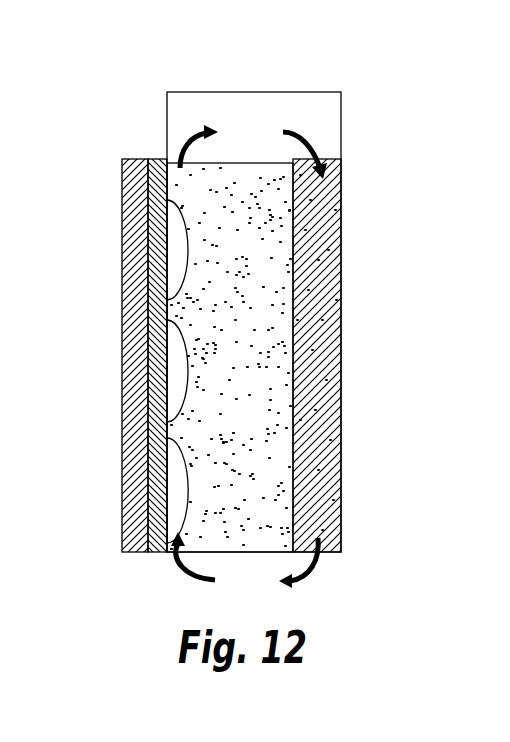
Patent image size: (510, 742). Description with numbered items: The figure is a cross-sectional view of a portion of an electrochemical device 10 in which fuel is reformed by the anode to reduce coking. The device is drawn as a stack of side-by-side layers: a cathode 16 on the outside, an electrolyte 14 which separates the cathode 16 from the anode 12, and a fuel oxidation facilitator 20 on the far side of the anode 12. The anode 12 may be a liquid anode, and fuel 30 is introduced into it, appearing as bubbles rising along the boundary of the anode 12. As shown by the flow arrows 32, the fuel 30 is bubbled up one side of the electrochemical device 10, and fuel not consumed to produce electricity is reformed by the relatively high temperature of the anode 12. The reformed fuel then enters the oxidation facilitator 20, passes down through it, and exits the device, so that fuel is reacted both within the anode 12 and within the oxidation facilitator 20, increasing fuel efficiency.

The electrochemical device 10 is at (334, 80).
The anode 12 is at (252, 241).
The electrolyte 14 is at (160, 157).
The cathode 16 is at (135, 157).
The fuel oxidation facilitator 20 is at (318, 326).
The fuel 30 is at (180, 257).
The flow arrows 32 is at (181, 133).